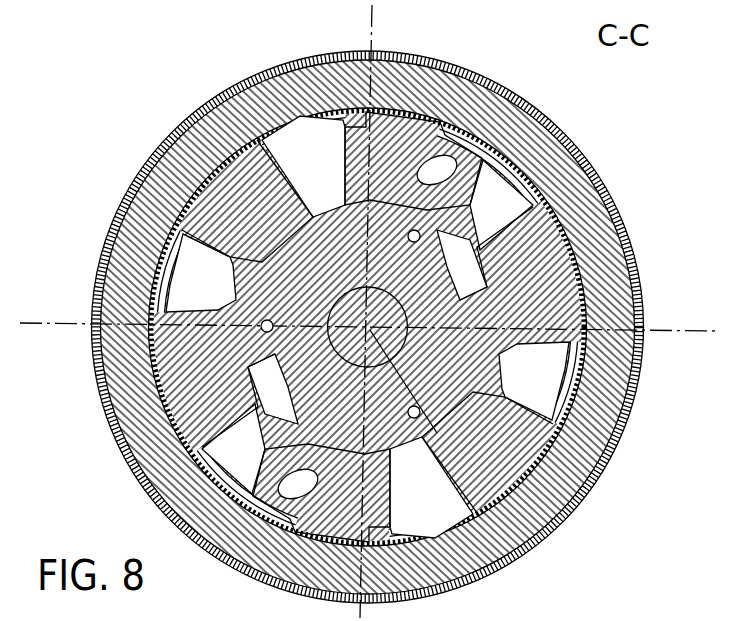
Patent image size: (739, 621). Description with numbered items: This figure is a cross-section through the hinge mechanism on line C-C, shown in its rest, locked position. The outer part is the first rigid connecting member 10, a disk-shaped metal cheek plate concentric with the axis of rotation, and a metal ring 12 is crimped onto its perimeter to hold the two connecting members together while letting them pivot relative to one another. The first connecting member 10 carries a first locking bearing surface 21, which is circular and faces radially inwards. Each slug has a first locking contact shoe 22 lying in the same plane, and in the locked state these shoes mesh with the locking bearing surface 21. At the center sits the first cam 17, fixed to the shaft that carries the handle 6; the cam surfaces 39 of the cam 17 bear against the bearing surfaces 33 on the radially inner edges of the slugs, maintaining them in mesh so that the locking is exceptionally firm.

The handle 6 is at (500, 478).
The first rigid connecting member 10 is at (552, 158).
The metal ring 12 is at (617, 227).
The first cam 17 is at (437, 317).
The first locking bearing surface 21 is at (408, 117).
The first locking contact shoe 22 is at (455, 132).
The bearing surface 33 is at (259, 142).
The cam surface 39 is at (267, 243).